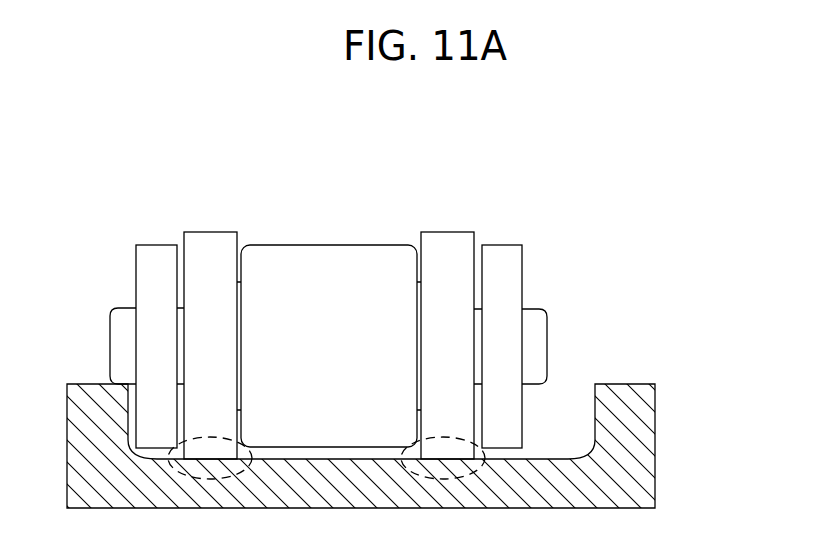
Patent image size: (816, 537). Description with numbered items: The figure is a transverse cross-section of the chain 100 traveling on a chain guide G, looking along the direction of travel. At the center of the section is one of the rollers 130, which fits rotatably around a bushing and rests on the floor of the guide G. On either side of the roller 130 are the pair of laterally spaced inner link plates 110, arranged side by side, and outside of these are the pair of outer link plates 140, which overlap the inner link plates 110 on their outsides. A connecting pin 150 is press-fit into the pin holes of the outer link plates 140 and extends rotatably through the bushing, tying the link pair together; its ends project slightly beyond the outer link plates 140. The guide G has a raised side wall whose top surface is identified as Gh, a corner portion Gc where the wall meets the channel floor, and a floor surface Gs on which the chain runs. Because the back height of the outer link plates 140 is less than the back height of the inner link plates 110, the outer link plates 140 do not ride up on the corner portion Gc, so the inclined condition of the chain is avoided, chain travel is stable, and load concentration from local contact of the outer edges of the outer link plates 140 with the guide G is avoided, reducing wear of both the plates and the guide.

The chain 100 is at (658, 174).
The inner link plates 110 is at (212, 255).
The rollers 130 is at (322, 255).
The outer link plates 140 is at (157, 257).
The connecting pins 150 is at (534, 318).
The horizontal gap Gh is at (595, 403).
The corner portion of the guide Gc is at (594, 447).
The bottom gap Gs is at (535, 462).
The gap G is at (722, 347).